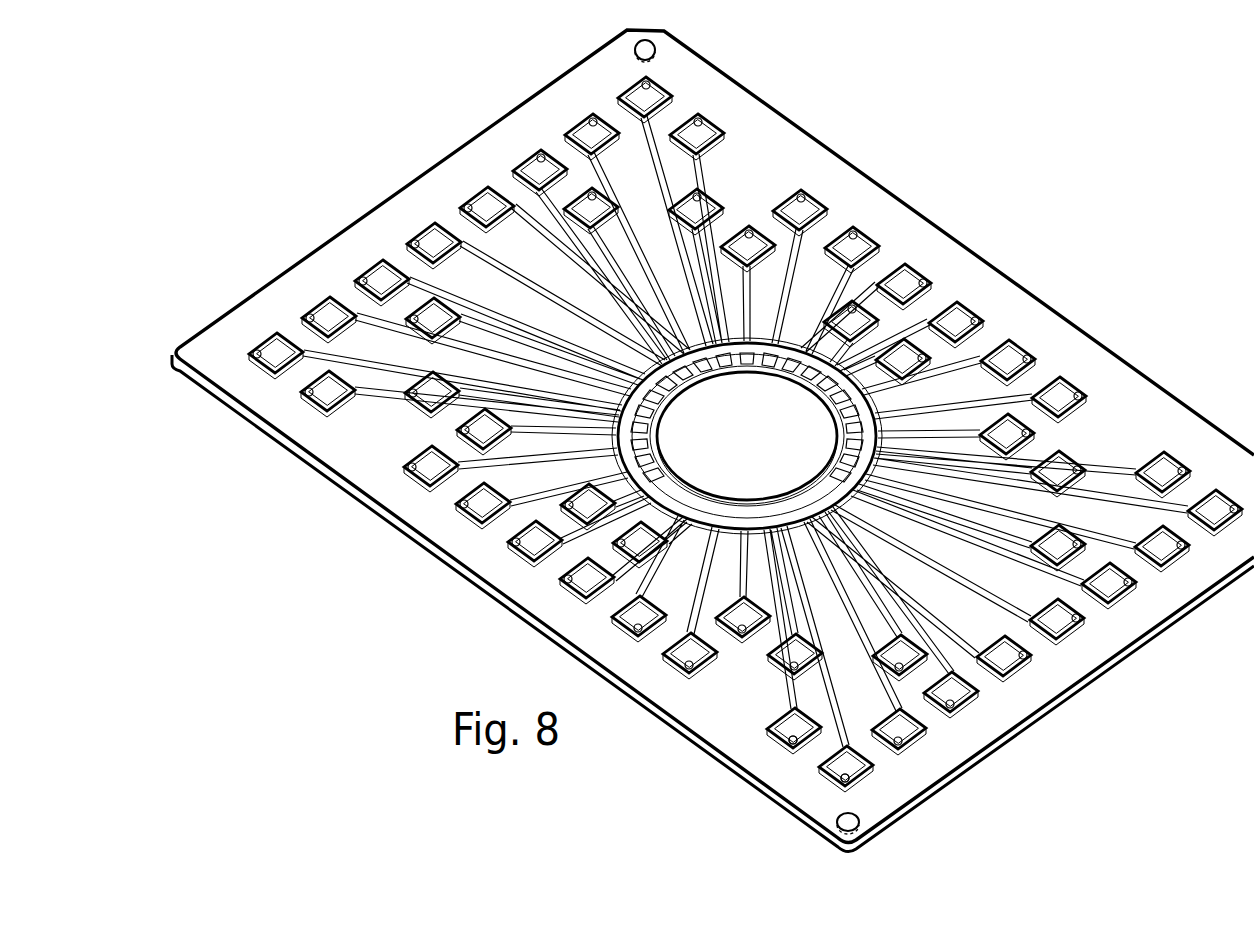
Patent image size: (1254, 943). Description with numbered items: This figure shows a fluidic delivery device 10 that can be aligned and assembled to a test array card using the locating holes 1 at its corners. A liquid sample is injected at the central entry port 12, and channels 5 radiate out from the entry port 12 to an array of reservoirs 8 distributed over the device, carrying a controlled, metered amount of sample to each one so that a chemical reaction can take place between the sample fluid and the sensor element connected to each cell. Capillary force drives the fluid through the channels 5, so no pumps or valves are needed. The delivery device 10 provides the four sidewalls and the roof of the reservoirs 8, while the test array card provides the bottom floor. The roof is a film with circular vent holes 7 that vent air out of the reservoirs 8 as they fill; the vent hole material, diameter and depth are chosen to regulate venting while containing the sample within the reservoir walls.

The locating holes 1 is at (652, 45).
The channels 5 is at (797, 560).
The vent holes 7 is at (843, 778).
The reservoirs 8 is at (617, 627).
The fluidic delivery device 10 is at (990, 231).
The entry port 12 is at (723, 416).